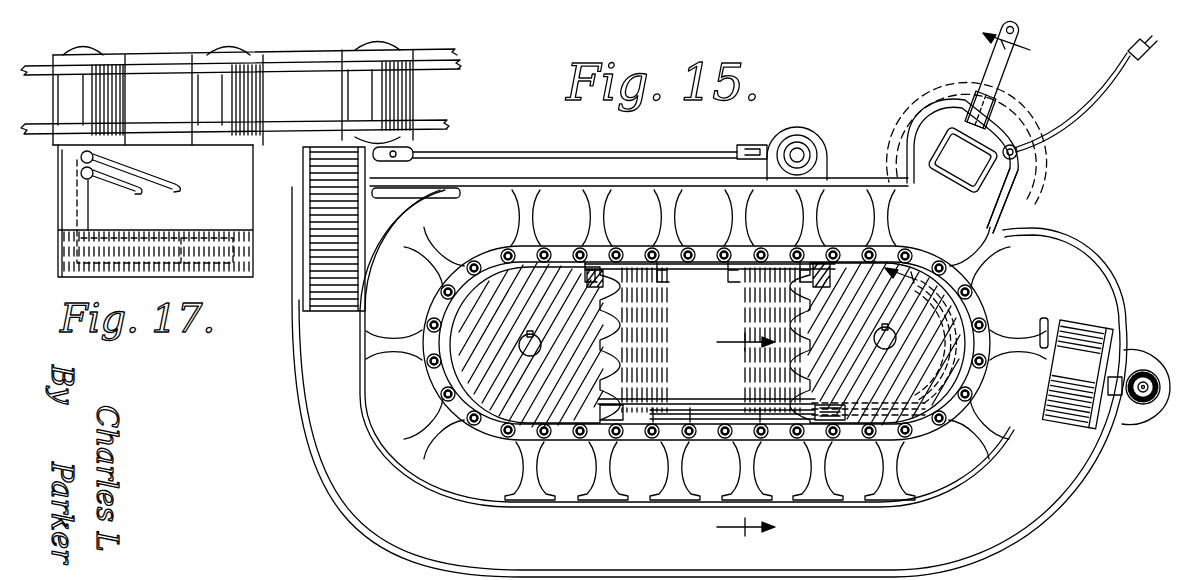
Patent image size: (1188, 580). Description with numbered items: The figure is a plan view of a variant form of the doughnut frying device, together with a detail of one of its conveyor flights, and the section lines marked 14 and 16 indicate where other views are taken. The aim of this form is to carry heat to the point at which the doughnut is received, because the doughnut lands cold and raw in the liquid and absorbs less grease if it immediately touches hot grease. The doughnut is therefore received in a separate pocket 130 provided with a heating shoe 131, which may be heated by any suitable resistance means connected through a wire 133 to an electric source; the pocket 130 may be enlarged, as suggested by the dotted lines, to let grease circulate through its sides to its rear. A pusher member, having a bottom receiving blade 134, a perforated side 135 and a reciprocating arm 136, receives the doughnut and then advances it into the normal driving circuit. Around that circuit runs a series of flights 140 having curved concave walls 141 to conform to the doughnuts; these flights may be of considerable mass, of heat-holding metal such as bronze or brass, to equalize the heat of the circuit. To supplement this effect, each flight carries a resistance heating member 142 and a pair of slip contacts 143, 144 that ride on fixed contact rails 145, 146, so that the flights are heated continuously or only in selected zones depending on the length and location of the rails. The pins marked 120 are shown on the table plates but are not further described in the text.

In FIG. 15, the section line 14- 14 is at (966, 171).
In FIG. 15, the section line 16- 16 is at (746, 437).
In FIG. 15, the locating pin 120 is at (532, 351).
In FIG. 15, the pocket 130 is at (907, 133).
In FIG. 15, the heating shoe 131 is at (1000, 182).
In FIG. 15, the wire 133 is at (1080, 107).
In FIG. 15, the bottom receiving blade 134 is at (947, 145).
In FIG. 15, the perforated side 135 is at (990, 133).
In FIG. 15, the reciprocating arm 136 is at (993, 64).
In FIG. 17, the flights 140 is at (250, 283).
In FIG. 15, the flights 140 is at (533, 497).
In FIG. 15, the curved concave walls 141 is at (612, 466).
In FIG. 17, the resistance heating member 142 is at (200, 240).
In FIG. 17, the slip contact 143 is at (123, 171).
In FIG. 15, the slip contact 143 is at (623, 278).
In FIG. 17, the slip contact 144 is at (110, 186).
In FIG. 15, the slip contact 144 is at (685, 278).
In FIG. 15, the contact rail 145 is at (657, 403).
In FIG. 15, the contact rail 146 is at (645, 437).